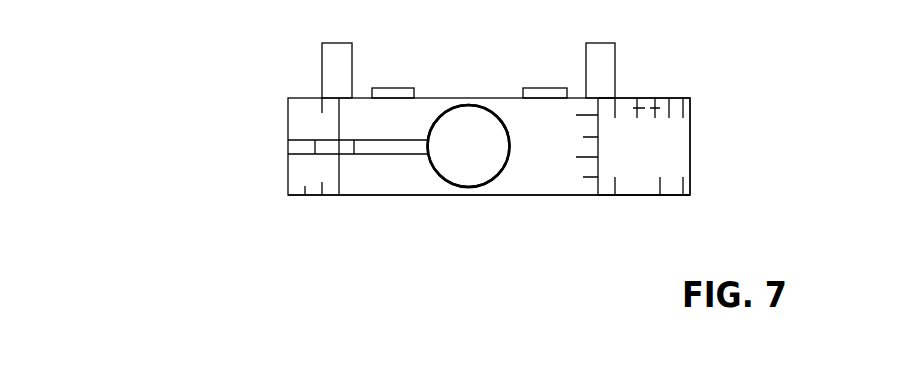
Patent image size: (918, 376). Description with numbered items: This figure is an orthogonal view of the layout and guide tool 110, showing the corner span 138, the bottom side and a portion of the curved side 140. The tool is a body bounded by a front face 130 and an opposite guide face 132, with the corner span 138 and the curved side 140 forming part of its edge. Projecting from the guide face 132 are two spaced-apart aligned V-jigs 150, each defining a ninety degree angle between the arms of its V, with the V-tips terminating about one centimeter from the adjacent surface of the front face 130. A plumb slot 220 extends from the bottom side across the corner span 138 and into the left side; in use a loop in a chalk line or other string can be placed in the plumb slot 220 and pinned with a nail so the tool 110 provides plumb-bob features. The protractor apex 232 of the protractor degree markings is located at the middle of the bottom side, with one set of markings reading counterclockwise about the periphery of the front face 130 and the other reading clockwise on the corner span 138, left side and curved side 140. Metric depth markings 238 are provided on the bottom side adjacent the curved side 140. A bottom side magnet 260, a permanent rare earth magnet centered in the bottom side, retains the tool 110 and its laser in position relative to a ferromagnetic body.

The layout and guide tool 110 is at (187, 62).
The front face 130 is at (505, 70).
The guide face 132 is at (568, 213).
The corner span 138 is at (323, 168).
The curved side 140 is at (658, 143).
The V-jig 150 is at (305, 69).
The plumb slot 220 is at (278, 148).
The protractor apex 232 is at (468, 93).
The metric depth markings 238 is at (590, 163).
The bottom side magnet 260 is at (461, 168).